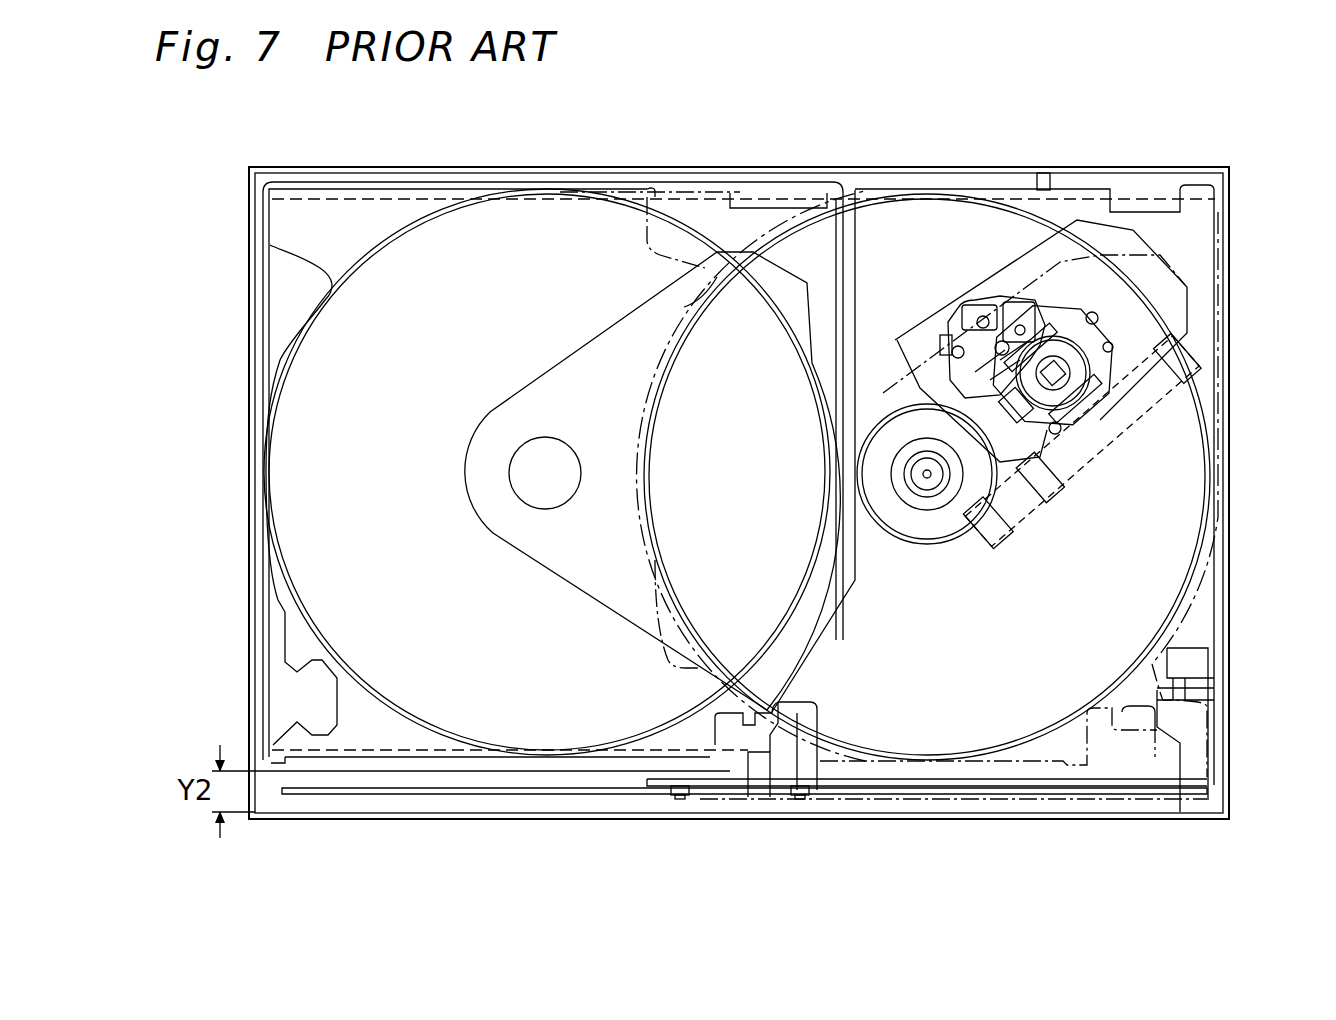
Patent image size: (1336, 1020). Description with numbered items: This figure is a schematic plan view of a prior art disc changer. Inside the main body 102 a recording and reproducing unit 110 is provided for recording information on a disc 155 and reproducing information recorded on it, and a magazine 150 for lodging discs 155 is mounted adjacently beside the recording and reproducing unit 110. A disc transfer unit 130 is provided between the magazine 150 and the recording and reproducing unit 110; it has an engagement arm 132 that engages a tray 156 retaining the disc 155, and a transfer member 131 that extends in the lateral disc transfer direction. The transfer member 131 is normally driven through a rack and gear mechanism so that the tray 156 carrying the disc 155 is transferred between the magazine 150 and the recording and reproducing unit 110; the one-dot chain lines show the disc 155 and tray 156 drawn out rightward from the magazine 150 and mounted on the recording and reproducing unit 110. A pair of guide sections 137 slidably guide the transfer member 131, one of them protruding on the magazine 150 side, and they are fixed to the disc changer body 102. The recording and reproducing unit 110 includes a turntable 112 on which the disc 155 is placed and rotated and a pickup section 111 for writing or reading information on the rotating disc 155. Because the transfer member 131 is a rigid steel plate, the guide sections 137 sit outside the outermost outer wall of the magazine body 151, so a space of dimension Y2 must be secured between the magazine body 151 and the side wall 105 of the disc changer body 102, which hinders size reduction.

The main body 102 is at (1232, 290).
The side wall 105 is at (792, 178).
The recording and reproducing unit 110 is at (1028, 531).
The pickup section 111 is at (1062, 300).
The turntable 112 is at (903, 428).
The disc transfer unit 130 is at (550, 797).
The transfer member 131 is at (605, 797).
The engagement arm 132 is at (735, 745).
The guide sections 137 is at (680, 800).
The magazine 150 is at (258, 320).
The magazine body 151 is at (333, 773).
The disc 155 is at (540, 215).
The tray 156 is at (390, 212).